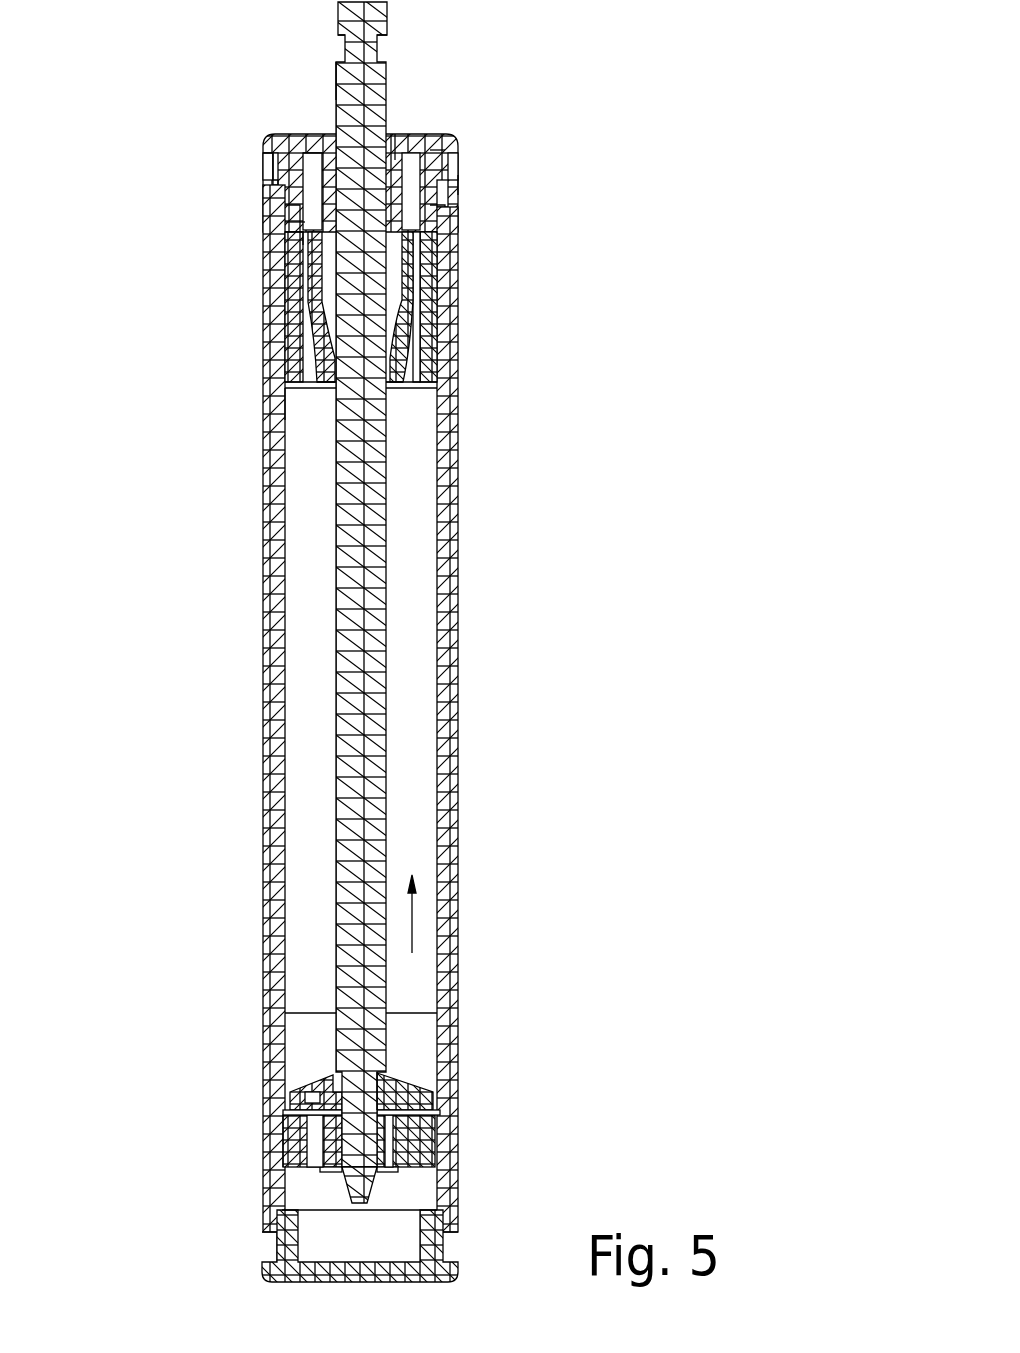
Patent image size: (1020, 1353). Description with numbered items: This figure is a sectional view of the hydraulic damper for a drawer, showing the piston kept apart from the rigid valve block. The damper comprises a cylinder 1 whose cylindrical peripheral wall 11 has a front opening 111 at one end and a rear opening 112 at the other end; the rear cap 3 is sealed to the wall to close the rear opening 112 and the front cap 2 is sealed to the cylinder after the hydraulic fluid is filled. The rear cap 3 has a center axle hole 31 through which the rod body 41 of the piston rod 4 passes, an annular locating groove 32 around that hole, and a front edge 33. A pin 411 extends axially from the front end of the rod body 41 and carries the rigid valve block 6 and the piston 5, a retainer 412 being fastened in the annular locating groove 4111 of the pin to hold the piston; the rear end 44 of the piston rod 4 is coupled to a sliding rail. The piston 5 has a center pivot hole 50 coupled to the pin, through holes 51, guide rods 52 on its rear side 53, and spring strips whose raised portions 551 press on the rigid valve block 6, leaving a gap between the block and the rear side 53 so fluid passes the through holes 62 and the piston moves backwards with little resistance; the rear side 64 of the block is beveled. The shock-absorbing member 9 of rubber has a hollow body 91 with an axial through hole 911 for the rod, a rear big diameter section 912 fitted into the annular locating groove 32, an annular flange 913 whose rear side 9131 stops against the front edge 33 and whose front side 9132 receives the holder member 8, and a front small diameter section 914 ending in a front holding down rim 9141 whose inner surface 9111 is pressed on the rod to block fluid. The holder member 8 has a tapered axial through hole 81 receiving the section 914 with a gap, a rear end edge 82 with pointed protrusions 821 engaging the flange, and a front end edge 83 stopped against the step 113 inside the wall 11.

The cylinder 1 is at (289, 707).
The cylindrical peripheral wall 11 is at (284, 622).
The front opening 111 is at (272, 1245).
The rear opening 112 is at (268, 176).
The step 113 is at (278, 398).
The front cap 2 is at (253, 1273).
The rear cap 3 is at (342, 149).
The center axle hole 31 is at (400, 137).
The annular locating groove 32 is at (445, 158).
The front edge 33 is at (462, 183).
The piston rod 4 is at (353, 612).
The rod body 41 is at (337, 92).
The pin 411 is at (420, 1092).
The retainer 412 is at (400, 1172).
The annular locating groove 4111 is at (322, 1192).
The rear end 44 is at (347, 40).
The piston 5 is at (362, 1130).
The center pivot hole 50 is at (440, 1157).
The through holes 51 is at (308, 1160).
The guide rods 52 is at (296, 1112).
The rear side 53 is at (457, 1122).
The raised portion 551 is at (296, 1130).
The rigid valve block 6 is at (334, 1060).
The through holes 62 is at (312, 1088).
The rear side 64 is at (322, 1072).
The holder member 8 is at (333, 330).
The tapered axial through hole 81 is at (300, 335).
The rear end edge 82 is at (300, 262).
The pointed protrusions 821 is at (440, 228).
The front end edge 83 is at (457, 375).
The shock-absorbing member 9 is at (332, 330).
The hollow body 91 is at (418, 258).
The axial through hole 911 is at (498, 307).
The inner surface 9111 is at (405, 375).
The rear big diameter section 912 is at (312, 170).
The annular flange 913 is at (292, 222).
The rear side 9131 is at (290, 214).
The front side 9132 is at (440, 214).
The front small diameter section 914 is at (195, 313).
The front holding down rim 9141 is at (320, 380).